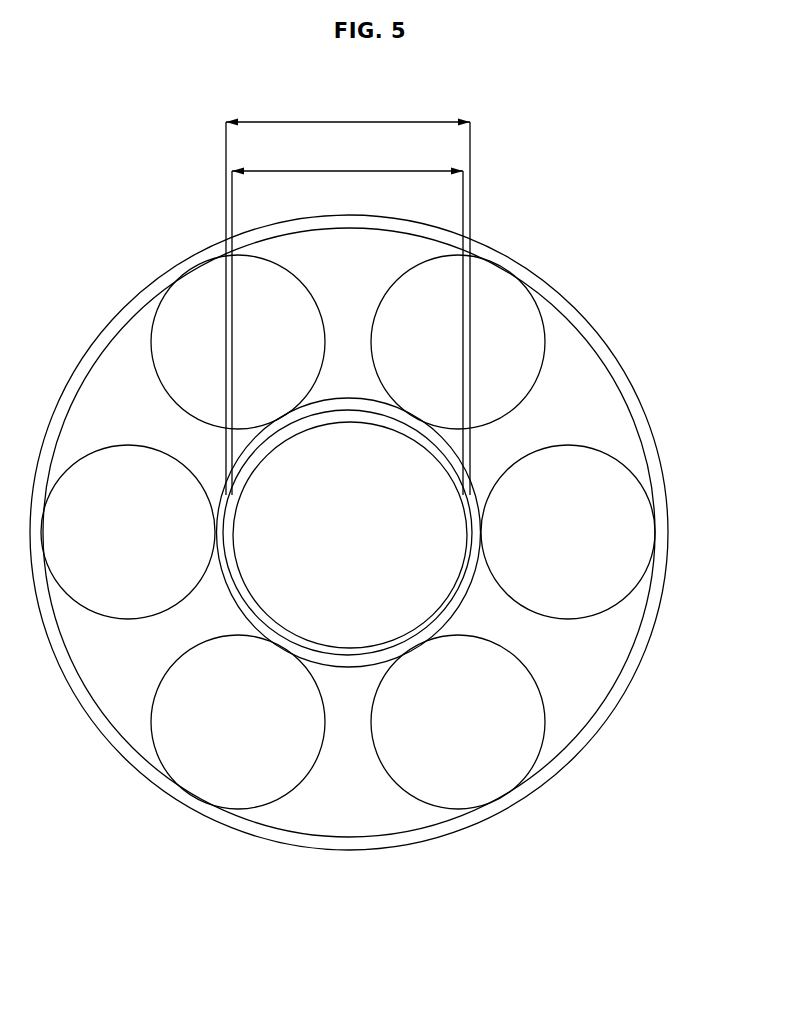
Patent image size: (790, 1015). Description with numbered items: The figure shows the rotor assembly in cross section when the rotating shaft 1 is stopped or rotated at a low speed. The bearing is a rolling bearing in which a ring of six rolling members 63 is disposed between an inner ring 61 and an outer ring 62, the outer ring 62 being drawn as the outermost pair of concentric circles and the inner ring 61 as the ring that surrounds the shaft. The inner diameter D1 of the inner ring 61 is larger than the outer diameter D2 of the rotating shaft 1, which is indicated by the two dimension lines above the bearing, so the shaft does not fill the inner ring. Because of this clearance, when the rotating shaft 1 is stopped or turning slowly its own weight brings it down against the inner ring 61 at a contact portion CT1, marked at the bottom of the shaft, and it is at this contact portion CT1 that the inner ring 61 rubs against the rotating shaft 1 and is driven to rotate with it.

The rotating shaft 1 is at (412, 485).
The inner ring 61 is at (472, 598).
The outer ring 62 is at (648, 617).
The rolling member 63 is at (617, 518).
The contact portion CT1 is at (347, 657).
The inner diameter of the inner ring D1 is at (348, 295).
The outer diameter of the rotating shaft D2 is at (347, 320).